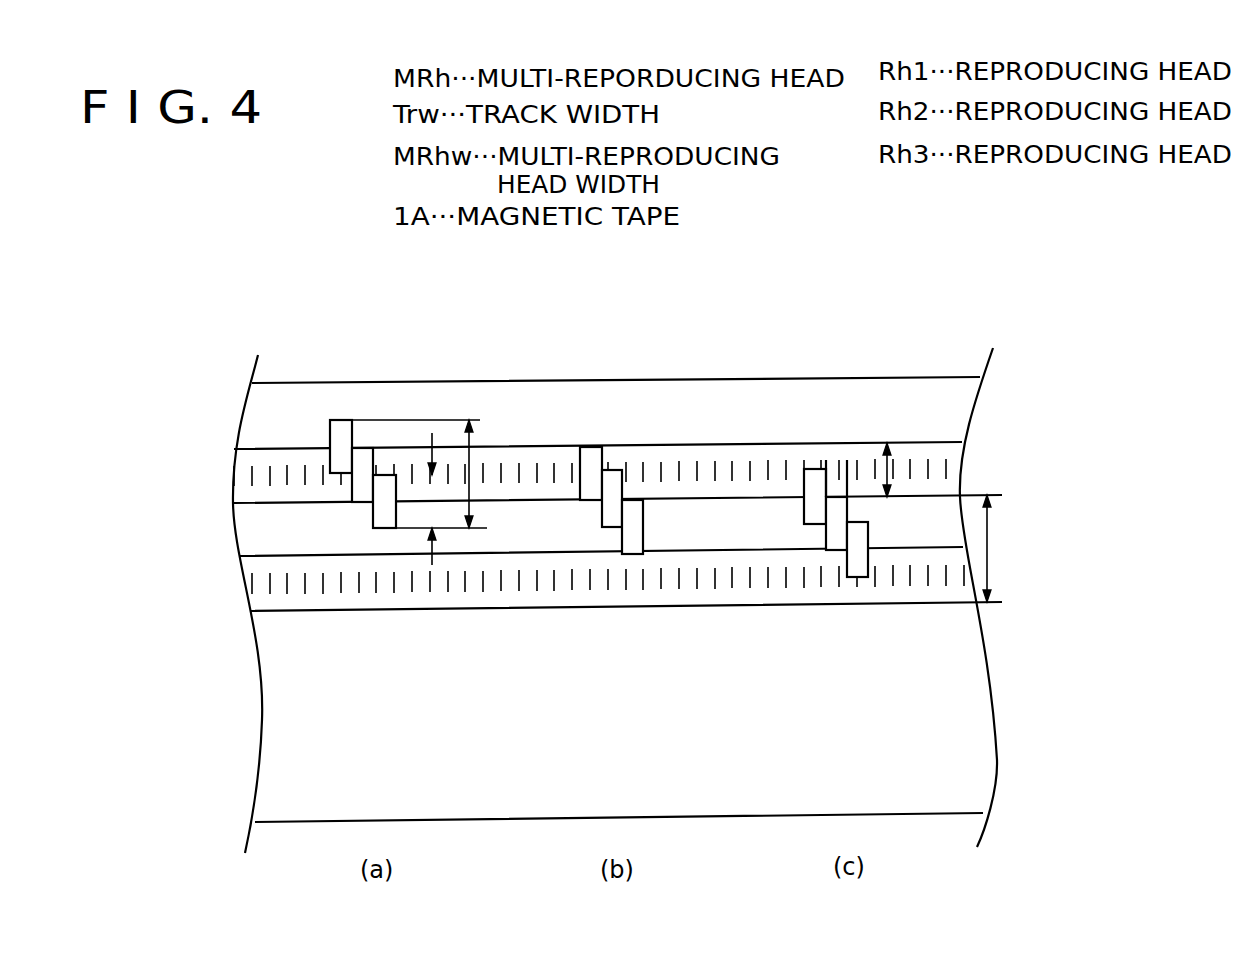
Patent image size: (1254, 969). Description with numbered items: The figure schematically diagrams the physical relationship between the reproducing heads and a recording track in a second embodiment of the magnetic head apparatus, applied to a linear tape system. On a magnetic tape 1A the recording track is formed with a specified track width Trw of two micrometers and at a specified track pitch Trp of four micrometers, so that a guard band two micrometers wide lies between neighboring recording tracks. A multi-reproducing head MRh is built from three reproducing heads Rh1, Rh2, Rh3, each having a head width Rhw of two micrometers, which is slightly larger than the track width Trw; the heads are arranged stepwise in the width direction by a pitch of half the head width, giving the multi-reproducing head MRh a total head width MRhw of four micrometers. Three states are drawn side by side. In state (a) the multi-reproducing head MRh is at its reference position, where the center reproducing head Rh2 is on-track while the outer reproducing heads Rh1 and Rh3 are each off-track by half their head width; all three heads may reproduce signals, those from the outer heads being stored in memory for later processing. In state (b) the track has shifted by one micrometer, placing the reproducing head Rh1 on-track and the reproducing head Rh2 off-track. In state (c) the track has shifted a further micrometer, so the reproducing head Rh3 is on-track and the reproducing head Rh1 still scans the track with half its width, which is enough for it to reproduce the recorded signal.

The magnetic tape 1A is at (947, 370).
The multi-reproducing head MRh is at (465, 326).
The reproducing head Rh1 is at (813, 483).
The reproducing head Rh2 is at (834, 505).
The reproducing head Rh3 is at (858, 535).
The multi-reproducing head width MRhw is at (471, 476).
The head width Rhw is at (432, 503).
The track width Trw is at (893, 470).
The track pitch Trp is at (987, 547).